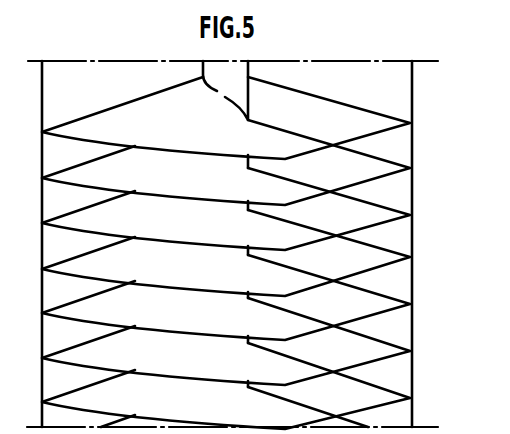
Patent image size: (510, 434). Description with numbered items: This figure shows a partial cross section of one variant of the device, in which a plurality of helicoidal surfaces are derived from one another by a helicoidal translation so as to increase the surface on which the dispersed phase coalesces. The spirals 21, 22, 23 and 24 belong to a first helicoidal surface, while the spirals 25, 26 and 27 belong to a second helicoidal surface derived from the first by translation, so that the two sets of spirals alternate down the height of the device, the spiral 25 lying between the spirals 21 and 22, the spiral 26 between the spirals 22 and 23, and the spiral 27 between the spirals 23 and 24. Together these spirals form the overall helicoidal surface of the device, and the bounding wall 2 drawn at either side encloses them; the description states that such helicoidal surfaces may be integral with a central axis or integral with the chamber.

The column wall 2 is at (412, 75).
The spiral 21 is at (370, 127).
The spiral 25 is at (370, 172).
The spiral 22 is at (372, 222).
The spiral 26 is at (377, 264).
The spiral 23 is at (380, 312).
The spiral 27 is at (390, 357).
The spiral 24 is at (392, 404).